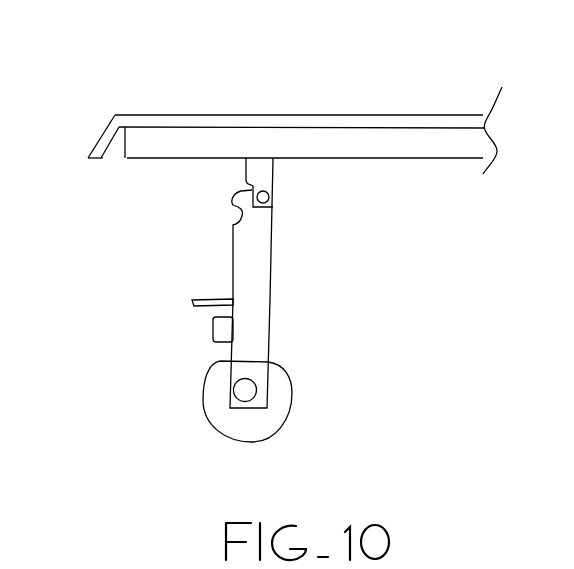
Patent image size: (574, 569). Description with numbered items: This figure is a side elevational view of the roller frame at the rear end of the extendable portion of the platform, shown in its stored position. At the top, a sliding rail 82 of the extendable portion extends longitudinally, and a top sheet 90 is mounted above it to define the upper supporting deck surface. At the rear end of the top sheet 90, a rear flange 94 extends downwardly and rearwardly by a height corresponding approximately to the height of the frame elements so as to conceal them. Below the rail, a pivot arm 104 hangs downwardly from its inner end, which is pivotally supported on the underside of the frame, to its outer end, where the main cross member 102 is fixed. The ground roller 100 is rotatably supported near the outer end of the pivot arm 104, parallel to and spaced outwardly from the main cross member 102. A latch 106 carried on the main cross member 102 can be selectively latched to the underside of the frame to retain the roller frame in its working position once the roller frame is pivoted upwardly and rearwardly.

The sliding rail 82 is at (393, 162).
The top sheet 90 is at (308, 128).
The rear flange 94 is at (92, 126).
The ground roller 100 is at (203, 397).
The main cross member 102 is at (213, 328).
The pivot arm 104 is at (275, 299).
The latch 106 is at (212, 297).